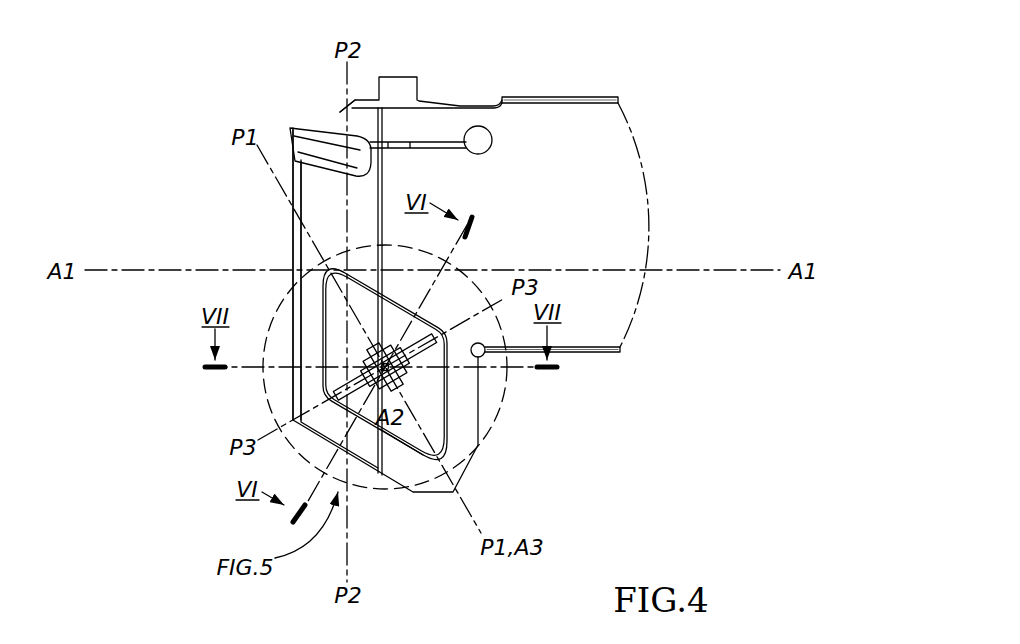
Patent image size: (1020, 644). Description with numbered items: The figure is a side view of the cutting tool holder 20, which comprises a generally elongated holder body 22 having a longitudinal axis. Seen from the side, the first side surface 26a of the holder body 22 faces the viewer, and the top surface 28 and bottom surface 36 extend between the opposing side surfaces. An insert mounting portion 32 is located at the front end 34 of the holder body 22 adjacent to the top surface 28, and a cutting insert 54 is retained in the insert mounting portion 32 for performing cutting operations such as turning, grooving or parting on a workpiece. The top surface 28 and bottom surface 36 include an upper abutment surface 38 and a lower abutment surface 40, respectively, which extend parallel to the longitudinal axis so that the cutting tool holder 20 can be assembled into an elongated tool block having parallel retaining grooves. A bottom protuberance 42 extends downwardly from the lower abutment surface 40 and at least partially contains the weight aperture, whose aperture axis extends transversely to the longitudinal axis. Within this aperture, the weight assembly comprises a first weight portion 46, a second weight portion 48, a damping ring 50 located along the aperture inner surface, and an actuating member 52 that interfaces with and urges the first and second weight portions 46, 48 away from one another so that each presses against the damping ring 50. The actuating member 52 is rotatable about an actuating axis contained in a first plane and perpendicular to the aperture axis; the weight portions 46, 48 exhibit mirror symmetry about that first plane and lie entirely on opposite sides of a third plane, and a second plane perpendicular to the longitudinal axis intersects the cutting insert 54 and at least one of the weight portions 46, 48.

The cutting tool holder 20 is at (362, 322).
The holder body 22 is at (612, 234).
The first side surface 26a is at (622, 240).
The top surface 28 is at (396, 69).
The insert mounting portion 32 is at (337, 112).
The front end 34 is at (288, 224).
The bottom surface 36 is at (564, 356).
The upper abutment surface 38 is at (591, 93).
The lower abutment surface 40 is at (569, 392).
The bottom protuberance 42 is at (472, 456).
The first weight portion 46 is at (335, 423).
The second weight portion 48 is at (406, 434).
The damping ring 50 is at (318, 392).
The actuating member 52 is at (404, 376).
The cutting insert 54 is at (322, 148).